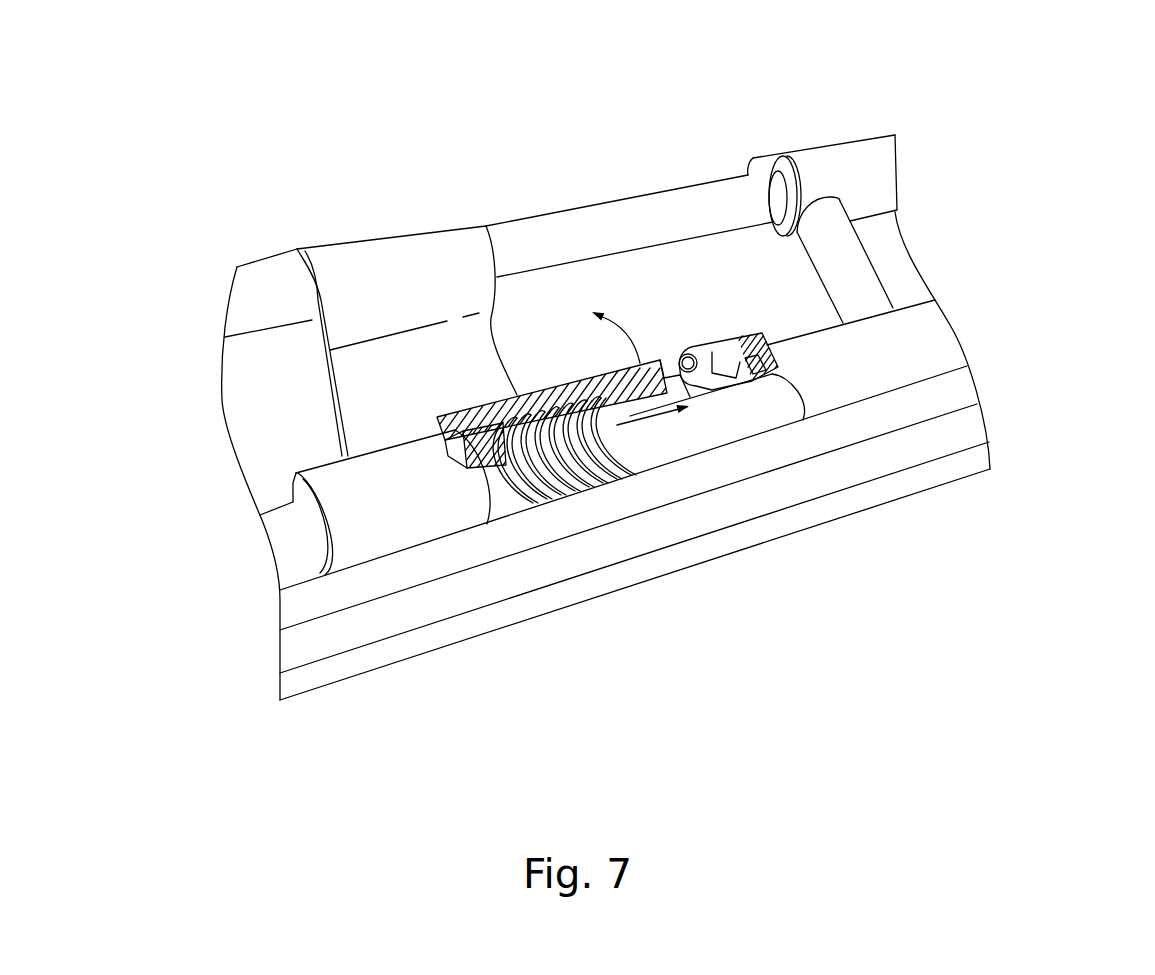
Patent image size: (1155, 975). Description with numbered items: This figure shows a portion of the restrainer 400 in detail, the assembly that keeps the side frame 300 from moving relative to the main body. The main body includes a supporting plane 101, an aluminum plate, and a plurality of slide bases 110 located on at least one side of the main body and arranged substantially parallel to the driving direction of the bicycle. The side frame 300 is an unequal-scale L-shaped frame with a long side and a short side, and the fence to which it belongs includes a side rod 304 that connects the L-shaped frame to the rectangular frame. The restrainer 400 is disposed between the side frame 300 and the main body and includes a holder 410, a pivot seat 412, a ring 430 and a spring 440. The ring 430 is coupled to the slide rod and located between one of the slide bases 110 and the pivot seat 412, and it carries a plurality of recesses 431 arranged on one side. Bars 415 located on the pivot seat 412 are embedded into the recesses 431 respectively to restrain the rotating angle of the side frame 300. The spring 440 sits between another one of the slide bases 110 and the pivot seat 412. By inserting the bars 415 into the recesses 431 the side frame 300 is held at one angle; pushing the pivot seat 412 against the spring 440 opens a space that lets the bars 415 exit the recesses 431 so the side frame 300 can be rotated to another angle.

The supporting plane 101 is at (870, 463).
The slide bases 110 is at (390, 523).
The side frame 300 is at (868, 120).
The side rod 304 is at (722, 203).
The restrainer 400 is at (610, 162).
The holder 410 is at (403, 378).
The pivot seat 412 is at (573, 375).
The bars 415 is at (695, 392).
The ring 430 is at (718, 347).
The recesses 431 is at (680, 372).
The spring 440 is at (572, 458).